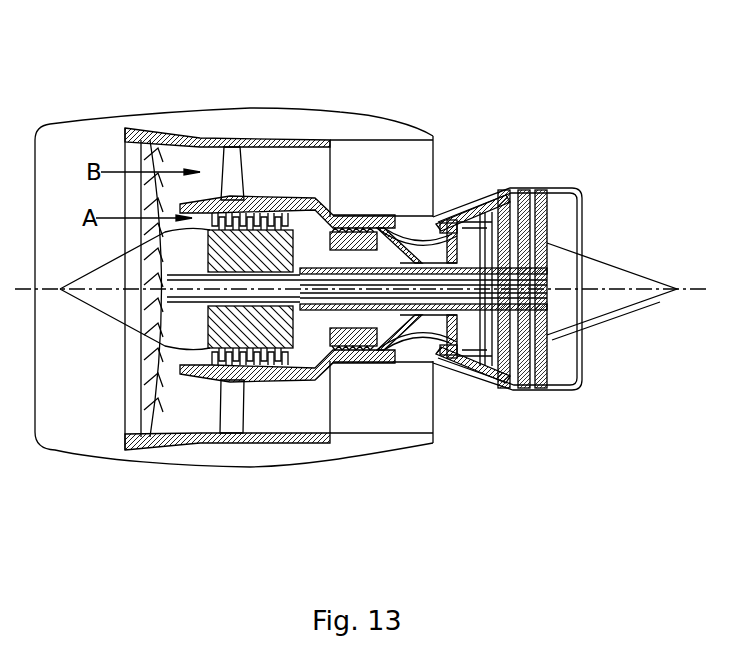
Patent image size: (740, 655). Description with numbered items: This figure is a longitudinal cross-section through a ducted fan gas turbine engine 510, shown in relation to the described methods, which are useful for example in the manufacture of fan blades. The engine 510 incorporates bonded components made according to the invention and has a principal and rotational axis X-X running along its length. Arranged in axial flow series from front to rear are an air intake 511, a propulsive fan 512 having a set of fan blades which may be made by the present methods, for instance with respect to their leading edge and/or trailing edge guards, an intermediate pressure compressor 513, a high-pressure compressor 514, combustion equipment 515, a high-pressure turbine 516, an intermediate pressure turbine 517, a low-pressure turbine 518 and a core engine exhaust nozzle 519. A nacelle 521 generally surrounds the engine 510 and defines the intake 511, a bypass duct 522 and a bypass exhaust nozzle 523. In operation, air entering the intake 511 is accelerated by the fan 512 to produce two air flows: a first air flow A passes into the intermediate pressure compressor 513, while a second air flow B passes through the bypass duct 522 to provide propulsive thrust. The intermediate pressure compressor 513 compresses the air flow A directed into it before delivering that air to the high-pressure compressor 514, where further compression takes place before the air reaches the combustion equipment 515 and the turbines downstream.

The ducted fan gas turbine engine 510 is at (100, 93).
The air intake 511 is at (80, 143).
The propulsive fan 512 is at (140, 393).
The intermediate pressure compressor 513 is at (258, 373).
The high-pressure compressor 514 is at (368, 228).
The combustion equipment 515 is at (392, 352).
The high-pressure turbine 516 is at (440, 364).
The intermediate pressure turbine 517 is at (475, 212).
The low-pressure turbine 518 is at (496, 387).
The core engine exhaust nozzle 519 is at (574, 190).
The nacelle 521 is at (235, 107).
The bypass duct 522 is at (407, 174).
The bypass exhaust nozzle 523 is at (433, 137).